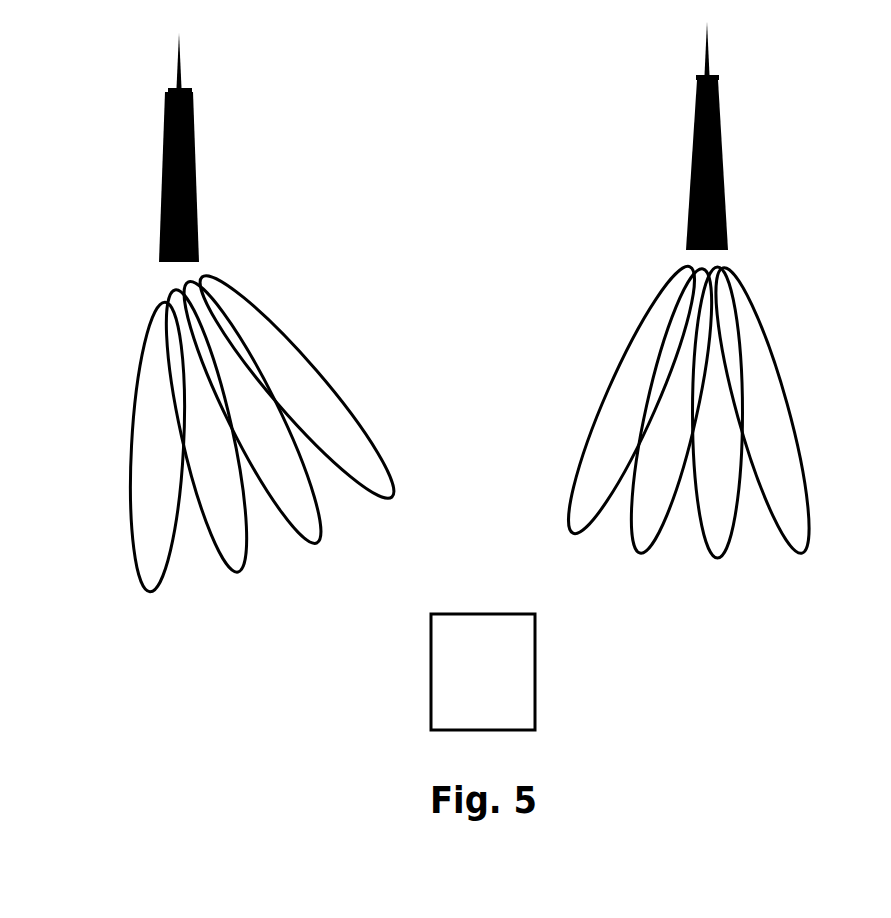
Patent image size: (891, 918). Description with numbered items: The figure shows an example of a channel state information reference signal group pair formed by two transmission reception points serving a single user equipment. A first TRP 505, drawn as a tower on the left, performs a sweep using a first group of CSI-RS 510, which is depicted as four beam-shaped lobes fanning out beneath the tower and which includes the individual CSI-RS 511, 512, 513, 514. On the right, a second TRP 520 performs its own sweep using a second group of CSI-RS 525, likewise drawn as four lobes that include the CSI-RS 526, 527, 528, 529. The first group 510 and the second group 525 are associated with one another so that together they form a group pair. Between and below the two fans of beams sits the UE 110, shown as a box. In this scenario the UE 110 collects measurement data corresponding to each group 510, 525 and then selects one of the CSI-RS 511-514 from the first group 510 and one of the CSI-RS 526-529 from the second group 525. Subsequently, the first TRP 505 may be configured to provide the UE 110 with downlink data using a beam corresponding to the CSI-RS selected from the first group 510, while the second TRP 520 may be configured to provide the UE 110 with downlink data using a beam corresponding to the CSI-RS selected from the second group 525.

The first TRP 505 is at (153, 147).
The first group of CSI-RS 510 is at (234, 426).
The CSI-RS 511 is at (157, 447).
The CSI-RS 512 is at (206, 430).
The CSI-RS 513 is at (252, 412).
The CSI-RS 514 is at (297, 386).
The second TRP 520 is at (681, 136).
The second group of CSI-RS 525 is at (701, 408).
The CSI-RS 526 is at (632, 400).
The CSI-RS 527 is at (671, 410).
The CSI-RS 528 is at (718, 412).
The CSI-RS 529 is at (762, 410).
The UE 110 is at (483, 672).